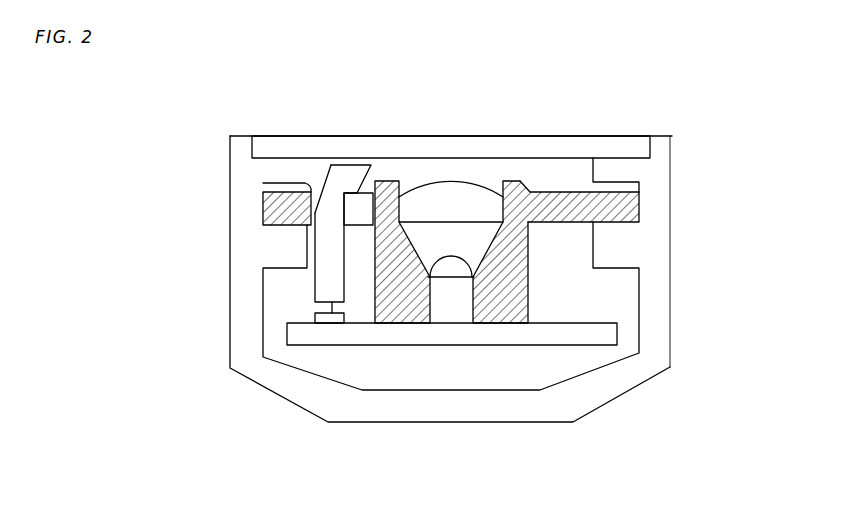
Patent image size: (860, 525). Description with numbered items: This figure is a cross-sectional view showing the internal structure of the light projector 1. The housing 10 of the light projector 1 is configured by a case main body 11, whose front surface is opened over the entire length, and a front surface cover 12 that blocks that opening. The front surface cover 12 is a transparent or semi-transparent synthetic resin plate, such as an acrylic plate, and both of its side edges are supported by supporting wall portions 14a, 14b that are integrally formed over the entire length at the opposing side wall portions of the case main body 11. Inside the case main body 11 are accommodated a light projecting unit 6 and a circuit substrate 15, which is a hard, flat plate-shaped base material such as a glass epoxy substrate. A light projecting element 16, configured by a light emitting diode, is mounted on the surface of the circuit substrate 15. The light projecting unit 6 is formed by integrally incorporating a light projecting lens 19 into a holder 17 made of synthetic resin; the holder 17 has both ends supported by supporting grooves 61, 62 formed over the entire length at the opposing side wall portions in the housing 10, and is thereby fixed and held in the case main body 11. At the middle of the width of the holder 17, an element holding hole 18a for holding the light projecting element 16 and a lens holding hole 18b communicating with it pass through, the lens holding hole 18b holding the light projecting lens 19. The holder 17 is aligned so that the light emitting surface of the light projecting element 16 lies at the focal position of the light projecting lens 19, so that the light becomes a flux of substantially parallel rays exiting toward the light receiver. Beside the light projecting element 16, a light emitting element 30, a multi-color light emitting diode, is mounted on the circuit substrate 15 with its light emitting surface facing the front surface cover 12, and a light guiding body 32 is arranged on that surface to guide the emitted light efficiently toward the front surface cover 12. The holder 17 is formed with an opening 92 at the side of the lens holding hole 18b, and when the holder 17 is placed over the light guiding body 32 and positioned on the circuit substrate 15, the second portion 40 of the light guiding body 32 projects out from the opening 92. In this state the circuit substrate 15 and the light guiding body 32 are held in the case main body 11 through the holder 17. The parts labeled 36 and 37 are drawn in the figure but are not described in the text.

The light projector 1 is at (677, 288).
The light projecting unit 6 is at (536, 293).
The housing 10 is at (673, 70).
The case main body 11 is at (658, 150).
The front surface cover 12 is at (612, 150).
The supporting wall portion 14a is at (287, 172).
The supporting wall portion 14b is at (614, 170).
The circuit substrate 15 is at (595, 337).
The light projecting element 16 is at (452, 315).
The holder 17 is at (400, 312).
The element holding hole 18a is at (463, 307).
The lens holding hole 18b is at (416, 196).
The light projecting lens 19 is at (478, 187).
The light emitting element 30 is at (320, 317).
The light guiding body 32 is at (313, 289).
The pin base 36 is at (332, 303).
The plunger head 37 is at (347, 165).
The second portion 40 is at (368, 178).
The supporting groove 61 is at (263, 200).
The supporting groove 62 is at (640, 217).
The opening 92 is at (313, 190).